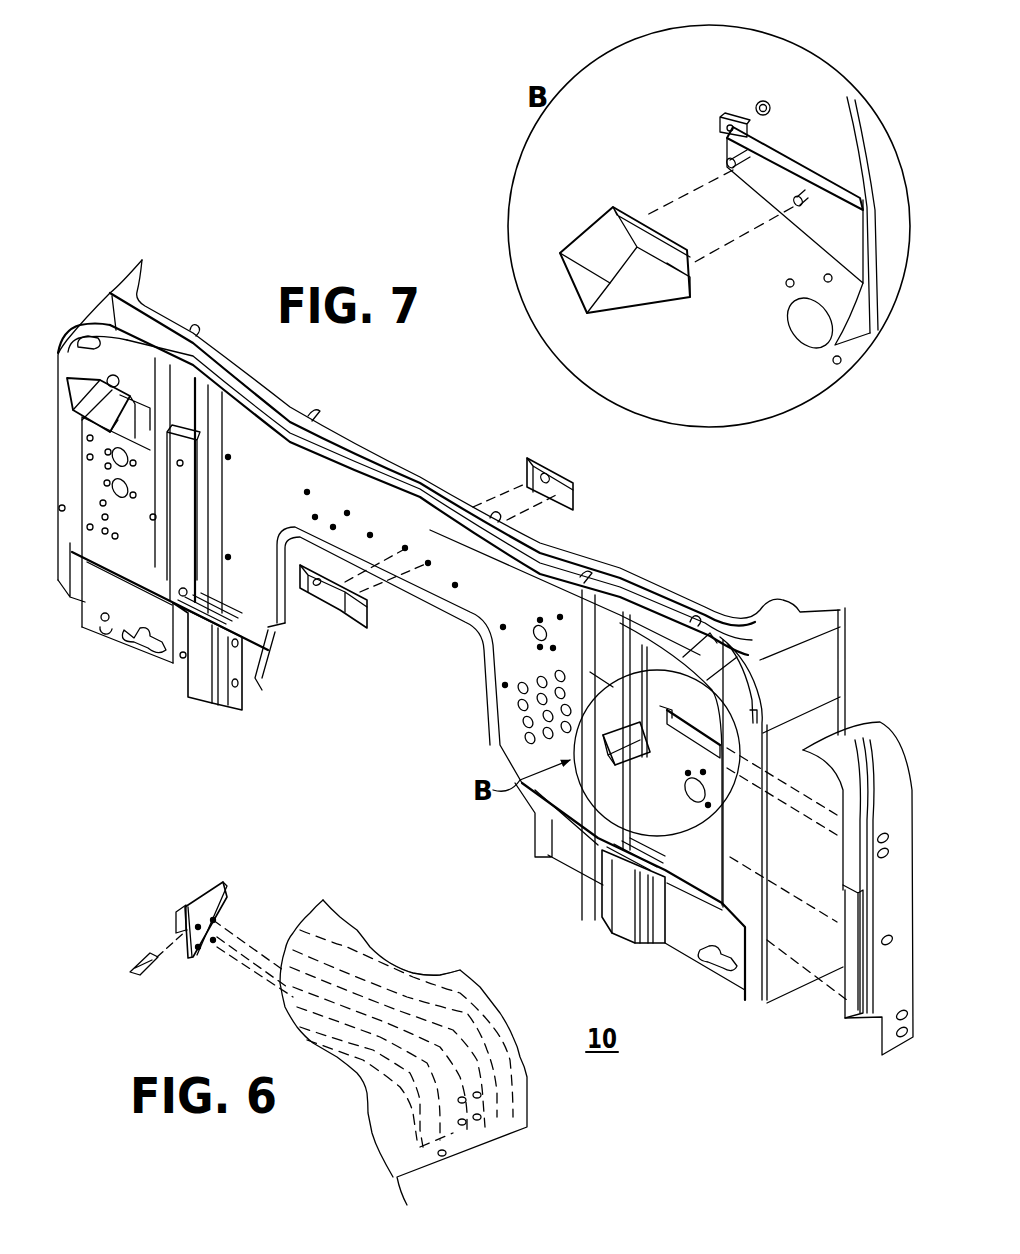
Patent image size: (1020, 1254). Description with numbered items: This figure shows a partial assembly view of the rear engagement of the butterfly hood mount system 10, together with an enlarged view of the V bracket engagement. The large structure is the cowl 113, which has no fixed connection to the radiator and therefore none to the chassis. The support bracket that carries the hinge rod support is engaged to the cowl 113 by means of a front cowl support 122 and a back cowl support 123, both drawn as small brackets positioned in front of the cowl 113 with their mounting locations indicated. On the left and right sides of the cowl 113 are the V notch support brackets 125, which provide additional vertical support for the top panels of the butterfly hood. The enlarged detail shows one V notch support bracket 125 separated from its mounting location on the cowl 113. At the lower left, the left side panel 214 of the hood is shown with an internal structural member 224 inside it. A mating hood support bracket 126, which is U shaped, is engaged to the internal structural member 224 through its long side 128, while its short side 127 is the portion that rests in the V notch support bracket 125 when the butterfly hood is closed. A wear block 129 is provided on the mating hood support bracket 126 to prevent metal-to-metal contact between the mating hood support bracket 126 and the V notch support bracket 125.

In FIG. 6, the butterfly hood mount system 10 is at (485, 657).
In FIG. 6, the cowl 113 is at (322, 490).
In FIG. 7, the cowl 113 is at (807, 173).
In FIG. 6, the front cowl support 122 is at (348, 630).
In FIG. 6, the back cowl support 123 is at (580, 481).
In FIG. 6, the "V" notch support bracket 125 is at (78, 412).
In FIG. 7, the "V" notch support bracket 125 is at (587, 233).
In FIG. 6, the mating hood support bracket 126 is at (204, 888).
In FIG. 6, the short side 127 is at (173, 918).
In FIG. 6, the long side 128 is at (201, 963).
In FIG. 6, the wear block 129 is at (137, 958).
In FIG. 6, the left side panel 214 is at (490, 990).
In FIG. 6, the internal structural member 224 is at (419, 975).